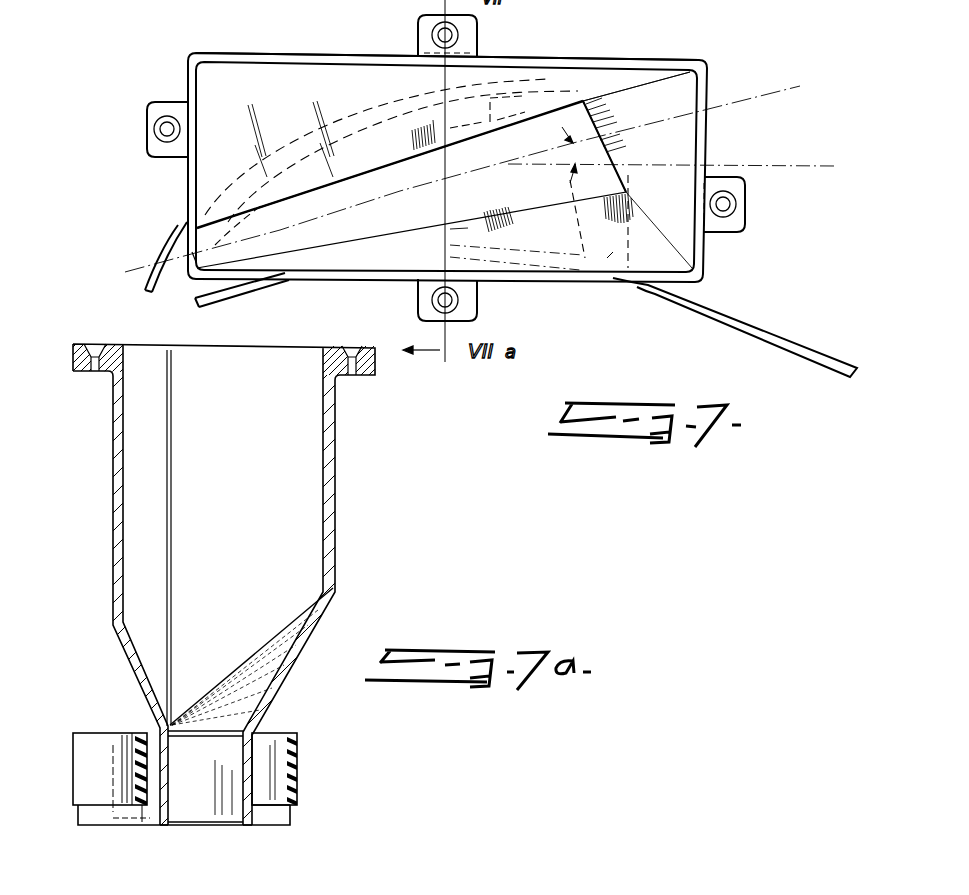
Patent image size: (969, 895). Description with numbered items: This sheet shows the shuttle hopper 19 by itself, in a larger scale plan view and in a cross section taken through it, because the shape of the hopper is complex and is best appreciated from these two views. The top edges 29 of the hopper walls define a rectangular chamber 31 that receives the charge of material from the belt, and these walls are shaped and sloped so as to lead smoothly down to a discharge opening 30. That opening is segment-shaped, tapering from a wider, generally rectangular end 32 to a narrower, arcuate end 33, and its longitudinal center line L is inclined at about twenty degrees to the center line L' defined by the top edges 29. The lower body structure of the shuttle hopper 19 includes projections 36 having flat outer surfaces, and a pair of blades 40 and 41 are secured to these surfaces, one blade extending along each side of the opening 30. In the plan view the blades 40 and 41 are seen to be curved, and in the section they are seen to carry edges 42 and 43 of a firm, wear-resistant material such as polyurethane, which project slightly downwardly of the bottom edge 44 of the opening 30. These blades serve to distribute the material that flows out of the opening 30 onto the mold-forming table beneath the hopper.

In FIG. 7, the shuttle hopper 19 is at (694, 55).
In FIG. 7A, the shuttle hopper 19 is at (345, 500).
In FIG. 7, the top edges 29 is at (248, 52).
In FIG. 7, the discharge opening 30 is at (480, 172).
In FIG. 7A, the discharge opening 30 is at (208, 813).
In FIG. 7A, the rectangular chamber 31 is at (296, 422).
In FIG. 7, the wider, generally rectangular end 32 is at (700, 135).
In FIG. 7, the narrower, arcuate end 33 is at (192, 252).
In FIG. 7, the projections 36 is at (548, 70).
In FIG. 7, the blade 40 is at (168, 243).
In FIG. 7A, the blade 40 is at (300, 762).
In FIG. 7, the blade 41 is at (225, 297).
In FIG. 7A, the blade 41 is at (80, 757).
In FIG. 7A, the edge 42 is at (98, 826).
In FIG. 7A, the edge 43 is at (283, 830).
In FIG. 7A, the bottom edge 44 is at (183, 823).